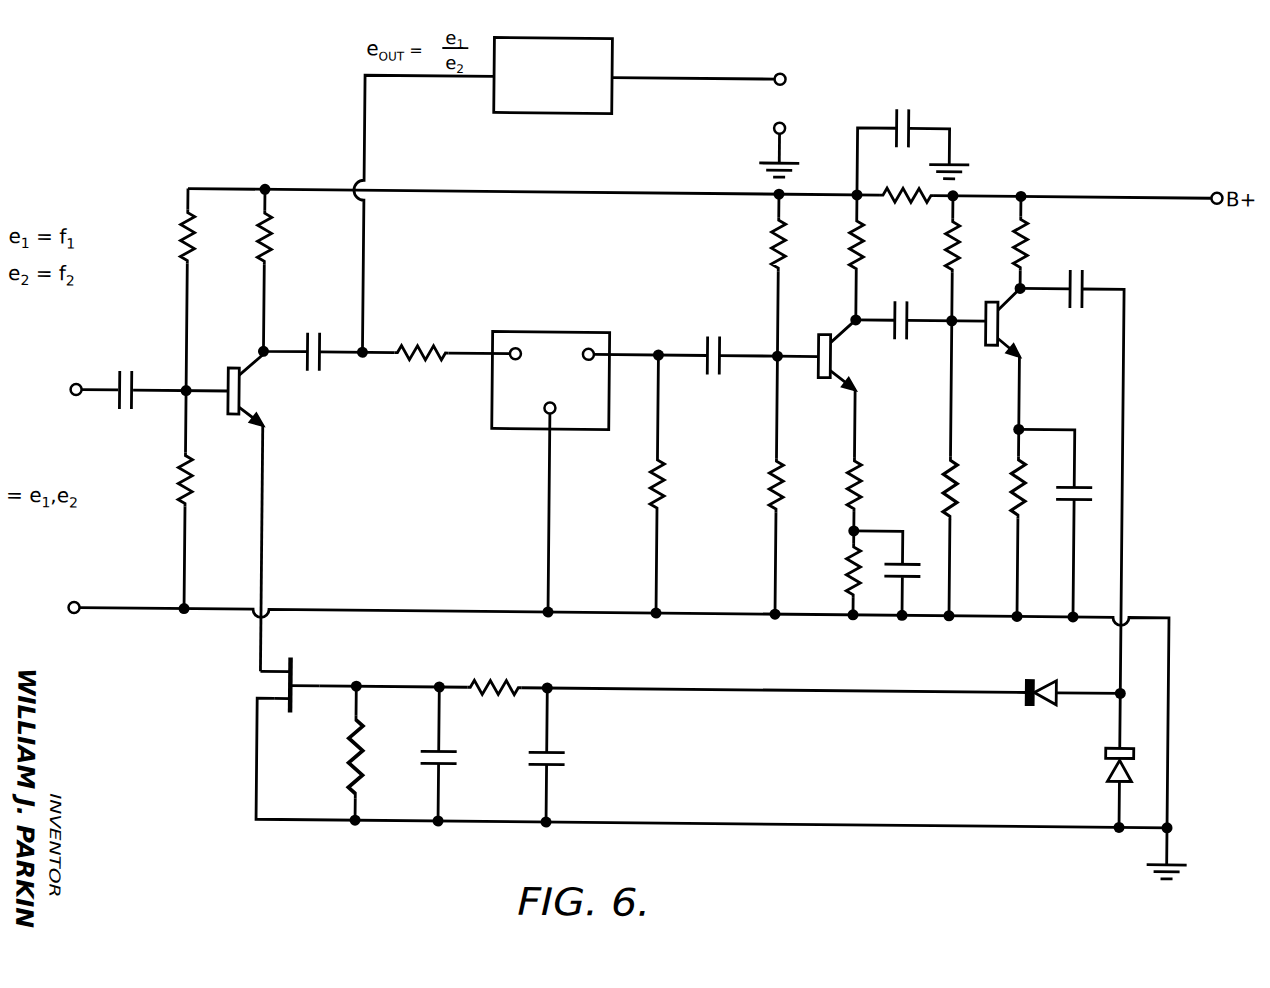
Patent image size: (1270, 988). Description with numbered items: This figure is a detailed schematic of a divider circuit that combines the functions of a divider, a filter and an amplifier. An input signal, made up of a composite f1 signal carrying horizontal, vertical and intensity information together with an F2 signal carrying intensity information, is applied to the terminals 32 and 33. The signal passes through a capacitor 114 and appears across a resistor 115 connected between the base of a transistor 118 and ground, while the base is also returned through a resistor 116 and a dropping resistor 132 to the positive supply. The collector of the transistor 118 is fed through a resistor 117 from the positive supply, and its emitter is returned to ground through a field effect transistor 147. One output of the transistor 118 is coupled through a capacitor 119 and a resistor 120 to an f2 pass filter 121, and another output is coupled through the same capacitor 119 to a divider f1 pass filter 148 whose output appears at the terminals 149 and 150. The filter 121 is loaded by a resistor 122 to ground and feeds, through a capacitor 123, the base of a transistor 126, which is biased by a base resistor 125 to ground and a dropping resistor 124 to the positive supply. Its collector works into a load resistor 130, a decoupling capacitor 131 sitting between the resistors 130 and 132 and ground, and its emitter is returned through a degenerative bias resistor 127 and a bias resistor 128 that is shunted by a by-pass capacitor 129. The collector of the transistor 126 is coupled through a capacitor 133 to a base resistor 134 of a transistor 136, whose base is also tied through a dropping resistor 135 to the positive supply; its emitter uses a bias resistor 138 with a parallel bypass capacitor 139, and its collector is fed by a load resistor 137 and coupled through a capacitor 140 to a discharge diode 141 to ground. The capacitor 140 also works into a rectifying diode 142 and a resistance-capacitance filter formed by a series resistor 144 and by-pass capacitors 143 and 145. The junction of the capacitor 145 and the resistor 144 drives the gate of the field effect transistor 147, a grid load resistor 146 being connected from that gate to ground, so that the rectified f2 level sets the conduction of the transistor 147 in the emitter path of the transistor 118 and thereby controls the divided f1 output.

The input terminal 32 is at (68, 391).
The input terminal 33 is at (70, 607).
The capacitor 114 is at (117, 376).
The resistor 115 is at (176, 481).
The resistor 116 is at (178, 232).
The resistor 117 is at (266, 242).
The transistor 118 is at (225, 371).
The capacitor 119 is at (320, 374).
The resistor 120 is at (428, 348).
The f2 pass filter 121 is at (563, 340).
The resistor 122 is at (652, 486).
The capacitor 123 is at (706, 368).
The dropping resistor 124 is at (770, 233).
The base resistor 125 is at (767, 478).
The transistor 126 is at (823, 374).
The degenerative bias resistor 127 is at (864, 479).
The bias resistor 128 is at (849, 564).
The by-pass capacitor 129 is at (912, 576).
The load resistor 130 is at (849, 244).
The decoupling capacitor 131 is at (908, 112).
The dropping resistor 132 is at (886, 190).
The capacitor 133 is at (906, 337).
The base resistor 134 is at (956, 478).
The dropping resistor 135 is at (944, 234).
The transistor 136 is at (983, 343).
The load resistor 137 is at (1020, 248).
The bias resistor 138 is at (1011, 503).
The bypass capacitor 139 is at (1092, 482).
The capacitor 140 is at (1085, 270).
The discharge diode 141 is at (1108, 765).
The rectifying diode 142 is at (1043, 677).
The by-pass capacitor 143 is at (558, 748).
The series resistor 144 is at (503, 680).
The by-pass capacitor 145 is at (458, 748).
The grid load resistor 146 is at (353, 742).
The field effect transistor 147 is at (298, 675).
The f1 pass filter 148 is at (598, 57).
The output terminal 149 is at (786, 70).
The output terminal 150 is at (764, 126).